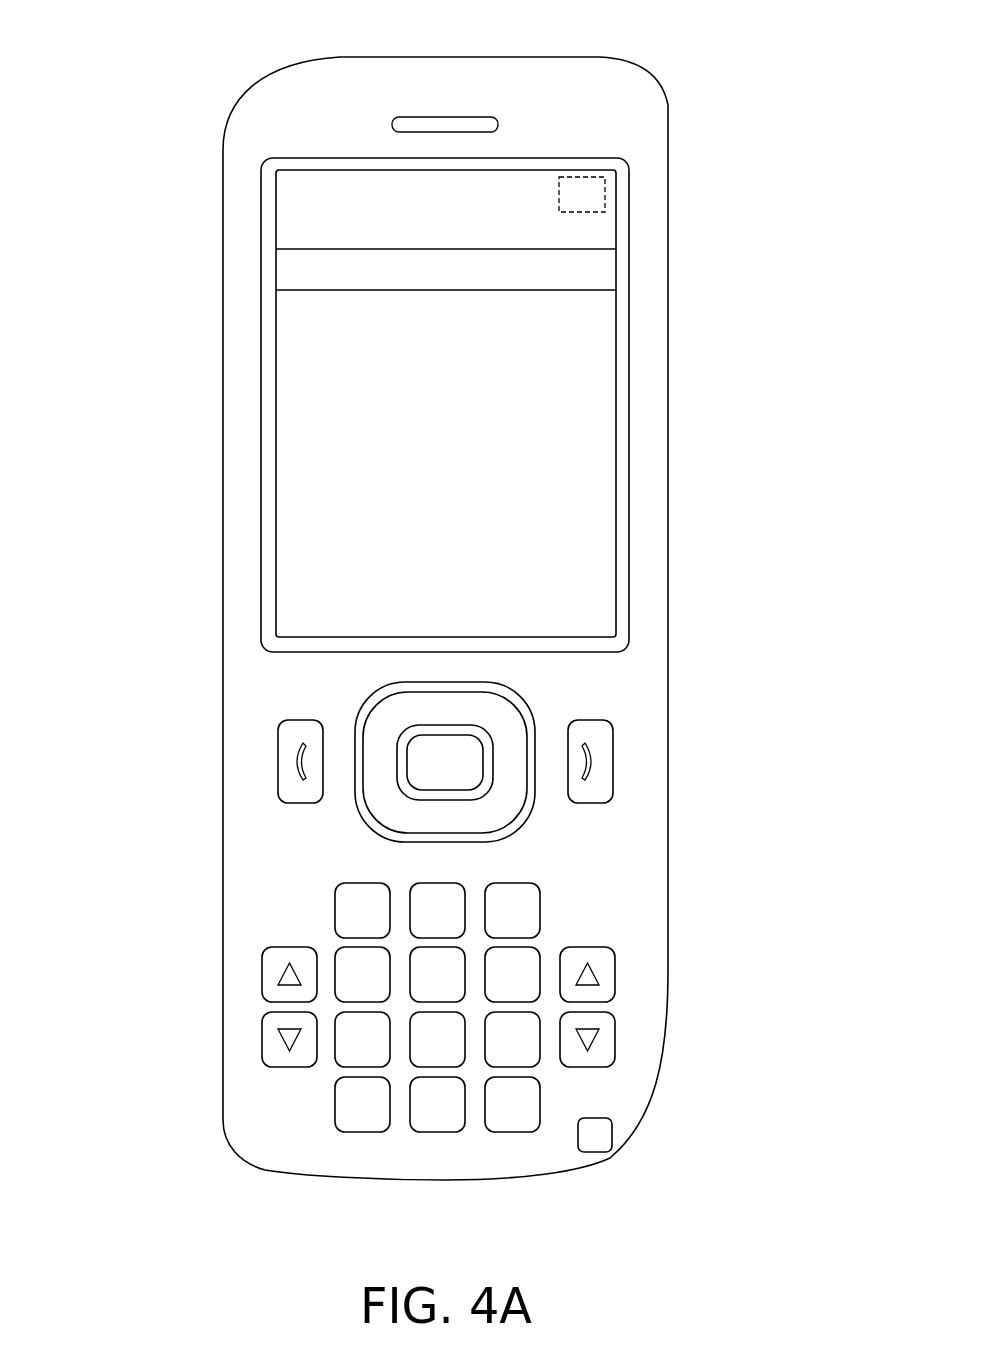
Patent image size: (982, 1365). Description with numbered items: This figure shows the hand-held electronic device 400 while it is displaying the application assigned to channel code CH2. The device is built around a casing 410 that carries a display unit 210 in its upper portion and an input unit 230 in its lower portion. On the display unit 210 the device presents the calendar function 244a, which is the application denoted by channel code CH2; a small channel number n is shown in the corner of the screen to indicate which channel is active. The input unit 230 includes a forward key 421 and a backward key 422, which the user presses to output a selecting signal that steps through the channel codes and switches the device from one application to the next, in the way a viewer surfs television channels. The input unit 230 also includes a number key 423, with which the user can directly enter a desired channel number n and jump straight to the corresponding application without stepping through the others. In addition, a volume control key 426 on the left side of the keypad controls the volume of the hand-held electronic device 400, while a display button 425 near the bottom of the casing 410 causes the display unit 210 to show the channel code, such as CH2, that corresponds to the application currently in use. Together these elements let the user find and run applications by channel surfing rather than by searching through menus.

The hand-held electronic device 400 is at (75, 31).
The casing 410 is at (222, 545).
The display unit 210 is at (425, 405).
The calendar function 244a is at (297, 193).
The channel number n is at (605, 181).
The input unit 230 is at (663, 993).
The forward key 421 is at (615, 975).
The backward key 422 is at (658, 1039).
The number key 423 is at (540, 913).
The display button 425 is at (612, 1125).
The volume control key 426 is at (262, 982).